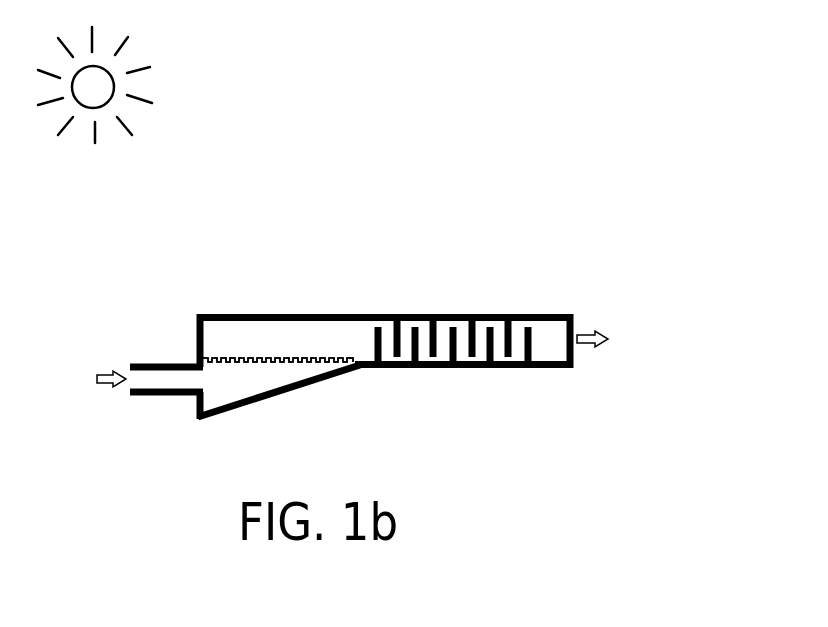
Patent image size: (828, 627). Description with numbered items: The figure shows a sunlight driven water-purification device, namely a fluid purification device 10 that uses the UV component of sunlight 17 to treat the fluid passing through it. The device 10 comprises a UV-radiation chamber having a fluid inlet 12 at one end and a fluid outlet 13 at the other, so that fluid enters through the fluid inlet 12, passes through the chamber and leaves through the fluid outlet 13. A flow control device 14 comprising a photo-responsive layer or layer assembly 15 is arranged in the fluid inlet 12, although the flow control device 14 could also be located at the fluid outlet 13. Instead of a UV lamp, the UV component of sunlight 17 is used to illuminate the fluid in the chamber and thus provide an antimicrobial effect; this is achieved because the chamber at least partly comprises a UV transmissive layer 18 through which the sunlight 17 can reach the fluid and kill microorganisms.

The fluid purification device 10 is at (386, 350).
The fluid inlet 12 is at (113, 373).
The fluid outlet 13 is at (604, 297).
The flow control device 14 is at (257, 364).
The photo-responsive layer or layer assembly 15 is at (258, 370).
The sunlight 17 is at (134, 82).
The UV transmissive layer 18 is at (247, 313).